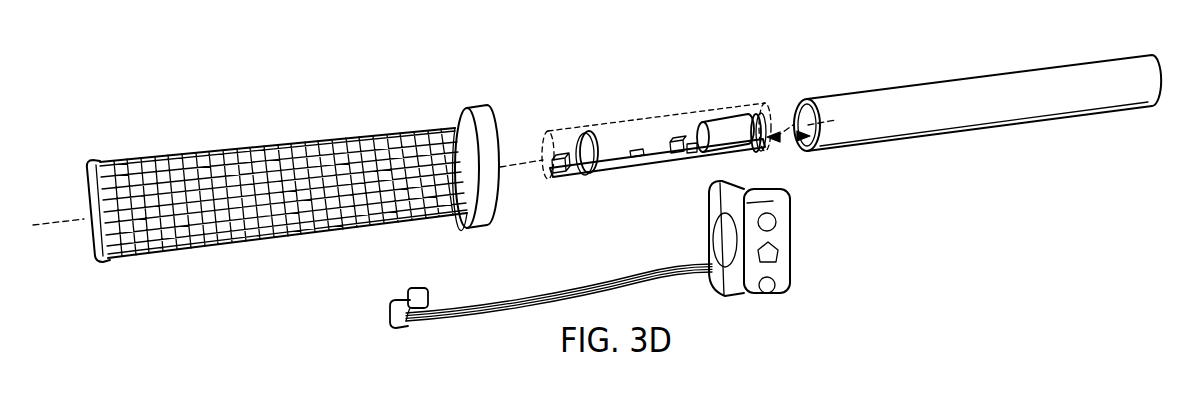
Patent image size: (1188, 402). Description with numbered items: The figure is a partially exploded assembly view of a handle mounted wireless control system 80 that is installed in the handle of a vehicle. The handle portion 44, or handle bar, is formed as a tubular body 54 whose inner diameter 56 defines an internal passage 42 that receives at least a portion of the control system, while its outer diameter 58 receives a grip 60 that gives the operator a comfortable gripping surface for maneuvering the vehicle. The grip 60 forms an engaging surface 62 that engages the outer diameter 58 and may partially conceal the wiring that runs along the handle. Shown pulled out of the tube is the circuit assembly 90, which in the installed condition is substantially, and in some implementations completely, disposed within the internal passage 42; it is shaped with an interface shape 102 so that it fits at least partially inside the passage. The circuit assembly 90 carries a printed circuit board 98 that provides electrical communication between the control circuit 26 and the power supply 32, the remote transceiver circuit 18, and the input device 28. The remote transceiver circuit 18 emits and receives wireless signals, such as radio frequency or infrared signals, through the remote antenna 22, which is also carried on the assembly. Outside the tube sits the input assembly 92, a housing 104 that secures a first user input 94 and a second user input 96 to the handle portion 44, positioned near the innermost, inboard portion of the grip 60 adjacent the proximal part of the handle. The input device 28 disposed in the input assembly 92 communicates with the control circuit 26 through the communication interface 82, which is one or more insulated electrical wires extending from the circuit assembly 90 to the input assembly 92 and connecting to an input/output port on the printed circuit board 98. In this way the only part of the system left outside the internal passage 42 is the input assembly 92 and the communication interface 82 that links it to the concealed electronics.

The handle mounted wireless control system 80 is at (267, 139).
The grip 60 is at (234, 162).
The engaging surface 62 is at (82, 239).
The circuit assembly 90 is at (681, 125).
The remote transceiver circuit 18 is at (620, 141).
The printed circuit board 98 is at (653, 166).
The interface shape 102 is at (608, 174).
The remote antenna 22 is at (587, 174).
The control circuit 26 is at (668, 133).
The power supply 32 is at (765, 149).
The internal passage 42 is at (788, 119).
The handle portion 44 is at (971, 85).
The tubular body 54 is at (984, 85).
The inner diameter 56 is at (938, 130).
The outer diameter 58 is at (795, 100).
The input device 28 is at (822, 264).
The input assembly 92 is at (822, 264).
The housing 104 is at (745, 297).
The first user input 94 is at (775, 223).
The second user input 96 is at (777, 291).
The communication interface 82 is at (500, 313).